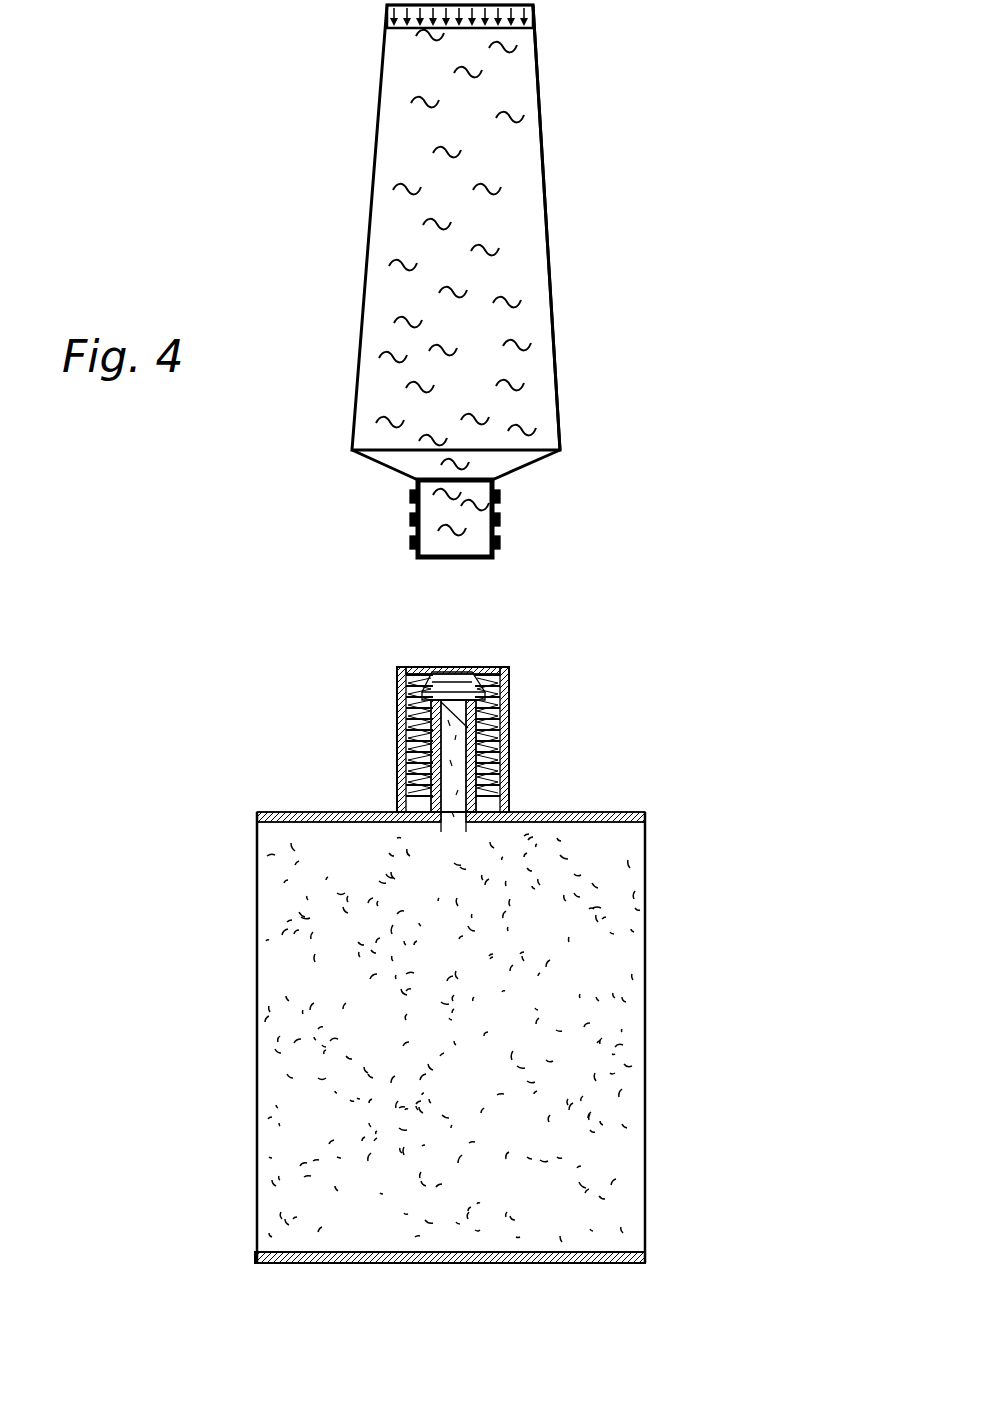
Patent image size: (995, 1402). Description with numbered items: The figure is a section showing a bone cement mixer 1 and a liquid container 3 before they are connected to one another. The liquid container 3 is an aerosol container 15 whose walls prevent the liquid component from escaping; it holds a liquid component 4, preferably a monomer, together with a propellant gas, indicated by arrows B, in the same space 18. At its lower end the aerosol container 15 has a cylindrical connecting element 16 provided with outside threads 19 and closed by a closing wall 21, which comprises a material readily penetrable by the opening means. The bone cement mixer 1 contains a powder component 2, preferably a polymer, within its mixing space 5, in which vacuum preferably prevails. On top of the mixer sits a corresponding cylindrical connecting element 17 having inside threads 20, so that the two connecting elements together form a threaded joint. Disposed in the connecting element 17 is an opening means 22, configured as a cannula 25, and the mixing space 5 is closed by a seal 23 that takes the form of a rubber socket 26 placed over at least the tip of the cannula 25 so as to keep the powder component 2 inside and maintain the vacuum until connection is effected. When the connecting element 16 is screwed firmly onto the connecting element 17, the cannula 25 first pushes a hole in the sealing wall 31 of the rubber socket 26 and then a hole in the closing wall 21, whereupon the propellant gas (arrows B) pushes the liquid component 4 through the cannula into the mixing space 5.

The bone cement mixer 1 is at (503, 1037).
The powder component 2 is at (605, 978).
The liquid container 3 is at (394, 290).
The liquid component 4 is at (512, 135).
The mixing space 5 is at (610, 1252).
The aerosol container 15 is at (442, 290).
The connecting element 16 is at (460, 513).
The connecting element 17 is at (468, 720).
The space 18 is at (534, 200).
The outside threads 19 is at (410, 502).
The inside threads 20 is at (407, 745).
The closing wall 21 is at (432, 557).
The opening means 22 is at (437, 790).
The seal 23 is at (455, 668).
The cannula 25 is at (500, 778).
The rubber socket 26 is at (480, 713).
The sealing wall 31 is at (407, 715).
The arrows B is at (523, 15).